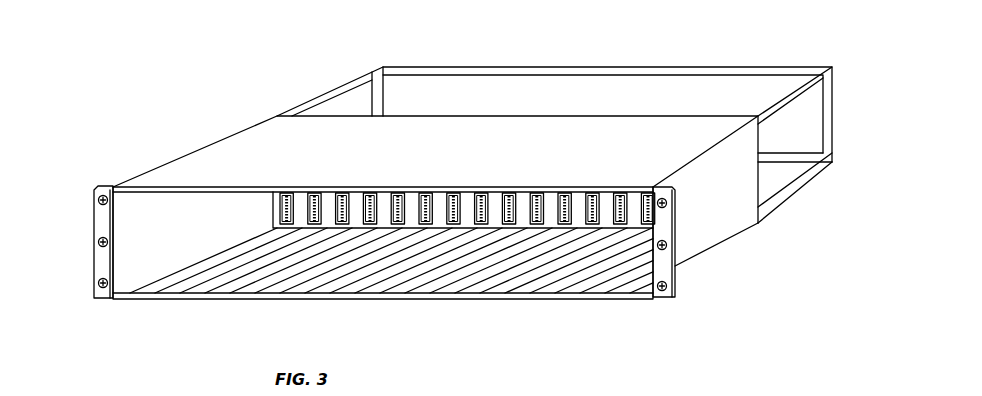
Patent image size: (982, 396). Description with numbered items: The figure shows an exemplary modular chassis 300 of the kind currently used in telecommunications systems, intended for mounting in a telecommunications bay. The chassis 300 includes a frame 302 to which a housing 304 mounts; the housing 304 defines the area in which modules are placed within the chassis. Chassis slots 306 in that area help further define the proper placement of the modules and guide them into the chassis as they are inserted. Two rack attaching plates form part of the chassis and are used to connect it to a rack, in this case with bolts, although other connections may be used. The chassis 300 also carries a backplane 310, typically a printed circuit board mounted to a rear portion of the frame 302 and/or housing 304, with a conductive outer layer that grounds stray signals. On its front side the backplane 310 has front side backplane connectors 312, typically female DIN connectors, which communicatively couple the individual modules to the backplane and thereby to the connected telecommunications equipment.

The modular chassis 300 is at (163, 55).
The frame 302 is at (335, 83).
The housing 304 is at (168, 160).
The chassis slots 306 is at (148, 288).
The backplane 310 is at (548, 212).
The front side backplane connectors 312 is at (597, 223).